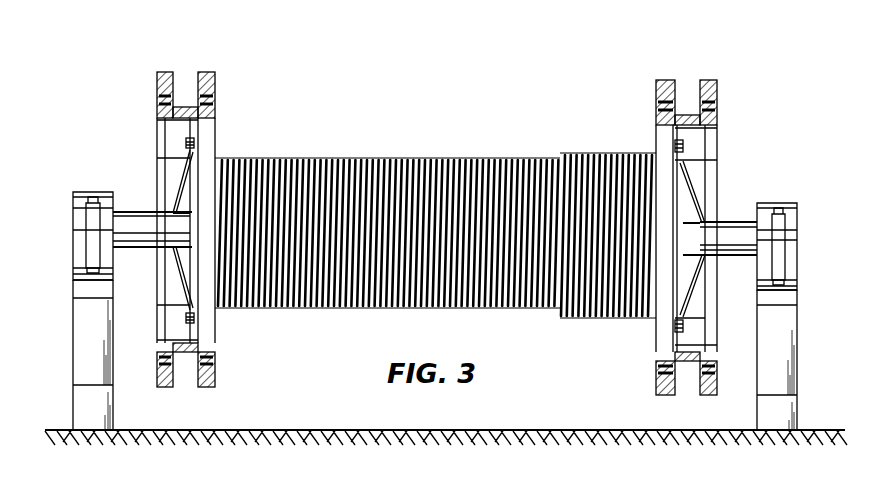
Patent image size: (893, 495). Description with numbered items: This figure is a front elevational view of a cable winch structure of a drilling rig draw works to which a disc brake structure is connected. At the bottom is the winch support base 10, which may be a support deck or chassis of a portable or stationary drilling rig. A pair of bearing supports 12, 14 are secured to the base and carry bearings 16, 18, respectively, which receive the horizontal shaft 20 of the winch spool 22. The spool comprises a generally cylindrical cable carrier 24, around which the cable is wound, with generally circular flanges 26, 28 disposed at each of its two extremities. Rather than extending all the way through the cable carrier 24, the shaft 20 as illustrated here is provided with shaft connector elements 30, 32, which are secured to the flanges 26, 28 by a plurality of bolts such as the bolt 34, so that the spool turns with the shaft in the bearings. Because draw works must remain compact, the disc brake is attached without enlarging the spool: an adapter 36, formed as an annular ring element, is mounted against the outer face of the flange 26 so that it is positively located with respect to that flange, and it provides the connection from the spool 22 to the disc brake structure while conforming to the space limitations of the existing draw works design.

The winch support base 10 is at (252, 430).
The bearing support 12 is at (86, 351).
The bearing support 14 is at (786, 366).
The bearing 16 is at (78, 216).
The bearing 18 is at (790, 277).
The horizontal shaft 20 is at (130, 208).
The winch spool 22 is at (255, 137).
The cable carrier 24 is at (432, 158).
The flange 26 is at (205, 338).
The flange 28 is at (660, 342).
The shaft connector element 30 is at (178, 198).
The shaft connector element 32 is at (702, 206).
The bolt 34 is at (186, 140).
The adapter 36 is at (188, 78).